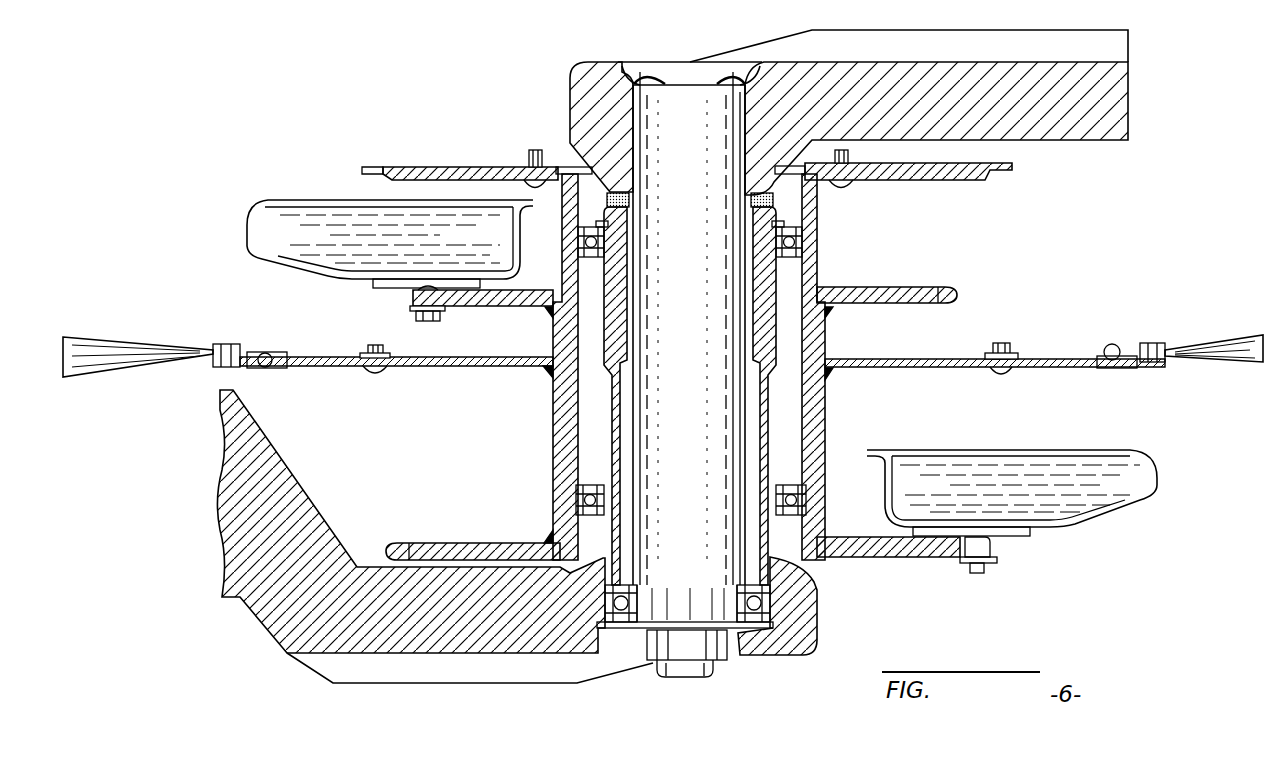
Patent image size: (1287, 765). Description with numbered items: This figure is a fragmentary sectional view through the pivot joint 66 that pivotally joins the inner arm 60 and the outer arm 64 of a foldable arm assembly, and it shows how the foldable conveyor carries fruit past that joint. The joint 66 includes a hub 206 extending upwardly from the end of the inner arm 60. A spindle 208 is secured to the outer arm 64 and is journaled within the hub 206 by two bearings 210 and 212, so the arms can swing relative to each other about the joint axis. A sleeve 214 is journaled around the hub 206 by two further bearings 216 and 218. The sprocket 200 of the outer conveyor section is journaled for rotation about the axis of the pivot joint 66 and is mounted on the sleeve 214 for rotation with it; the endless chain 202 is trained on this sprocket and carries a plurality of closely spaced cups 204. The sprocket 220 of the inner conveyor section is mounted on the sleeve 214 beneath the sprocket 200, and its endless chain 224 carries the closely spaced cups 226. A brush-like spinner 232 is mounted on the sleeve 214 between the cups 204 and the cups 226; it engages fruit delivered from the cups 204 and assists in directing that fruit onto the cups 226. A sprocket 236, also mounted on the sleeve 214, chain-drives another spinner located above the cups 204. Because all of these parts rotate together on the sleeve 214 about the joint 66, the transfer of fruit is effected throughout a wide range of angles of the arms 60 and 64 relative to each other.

The inner arm 60 is at (233, 507).
The outer arm 64 is at (1117, 112).
The pivot joint 66 is at (664, 54).
The sprocket 200 is at (893, 288).
The endless chain 202 is at (412, 307).
The cups 204 is at (258, 205).
The hub 206 is at (602, 433).
The spindle 208 is at (753, 457).
The bearing 210 is at (762, 645).
The bearing 212 is at (753, 280).
The sleeve 214 is at (553, 402).
The bearing 216 is at (573, 507).
The bearing 218 is at (812, 230).
The sprocket 220 is at (418, 543).
The endless chain 224 is at (992, 561).
The cups 226 is at (1020, 452).
The brush-like spinner 232 is at (1205, 342).
The sprocket 236 is at (453, 167).